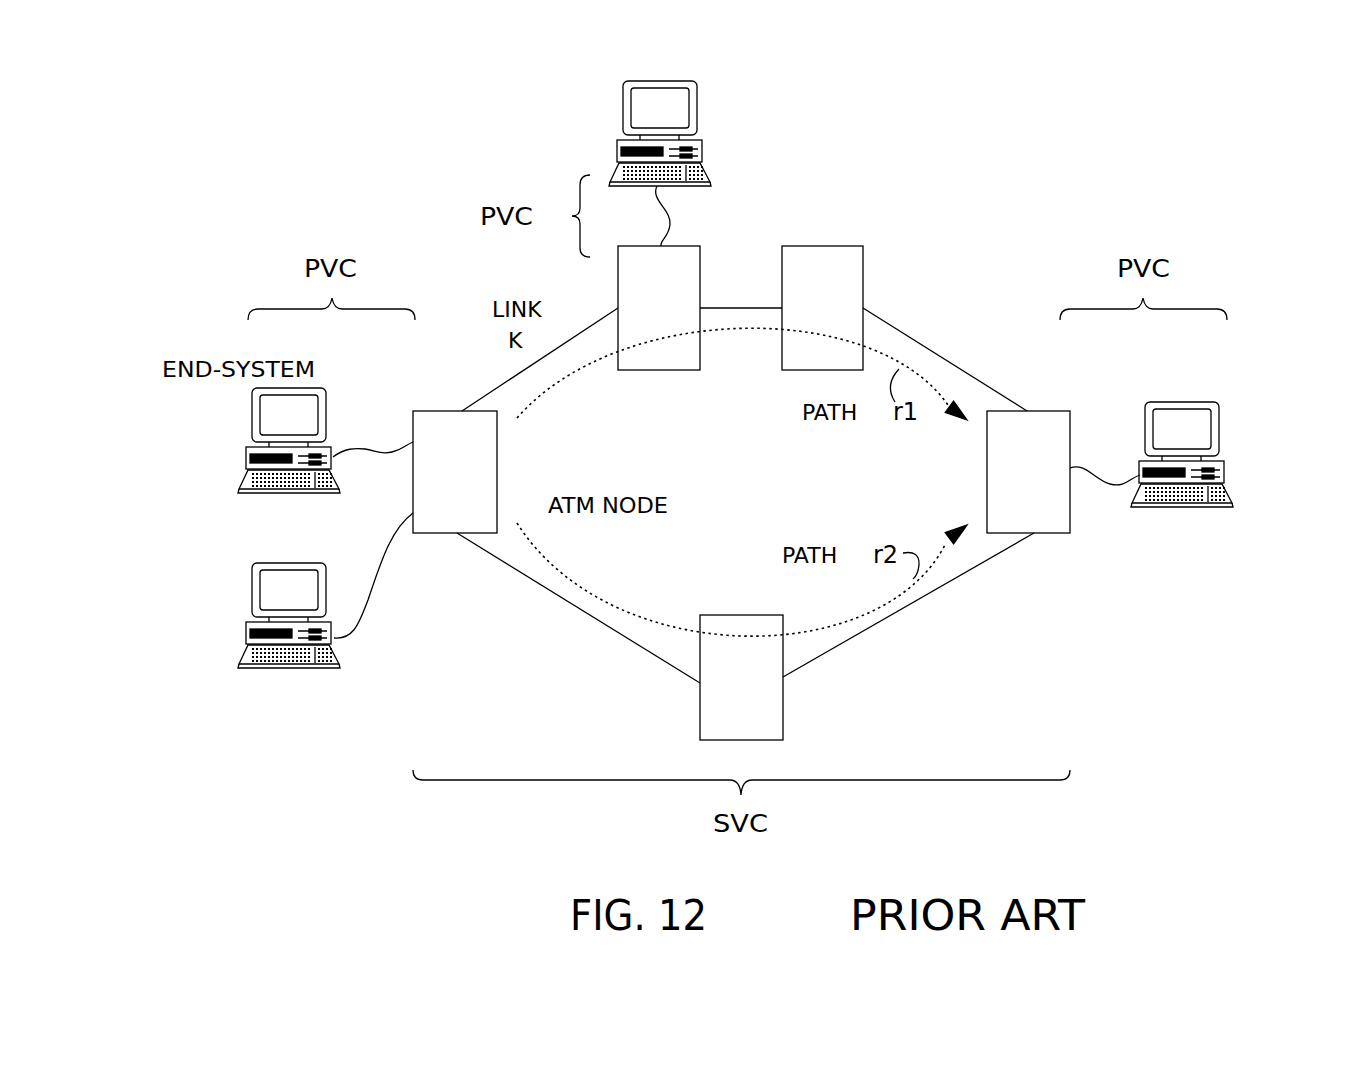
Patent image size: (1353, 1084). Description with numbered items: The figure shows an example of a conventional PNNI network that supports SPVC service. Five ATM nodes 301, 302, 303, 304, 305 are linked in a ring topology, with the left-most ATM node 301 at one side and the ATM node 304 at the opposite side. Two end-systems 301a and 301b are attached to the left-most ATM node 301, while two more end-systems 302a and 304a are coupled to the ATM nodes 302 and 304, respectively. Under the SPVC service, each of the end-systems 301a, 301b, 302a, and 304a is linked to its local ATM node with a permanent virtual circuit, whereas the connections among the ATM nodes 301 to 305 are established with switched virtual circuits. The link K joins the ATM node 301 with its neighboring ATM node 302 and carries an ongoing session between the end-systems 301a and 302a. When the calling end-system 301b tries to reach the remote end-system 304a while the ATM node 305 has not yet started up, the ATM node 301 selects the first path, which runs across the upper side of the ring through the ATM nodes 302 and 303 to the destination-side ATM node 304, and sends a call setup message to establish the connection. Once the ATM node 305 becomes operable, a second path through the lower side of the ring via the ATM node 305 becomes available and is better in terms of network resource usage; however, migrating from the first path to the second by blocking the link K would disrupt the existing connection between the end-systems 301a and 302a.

The ATM node 301 is at (497, 480).
The end-system 301a is at (258, 494).
The end-system 301b is at (268, 667).
The ATM node 302 is at (700, 267).
The end-system 302a is at (695, 162).
The ATM node 303 is at (863, 267).
The ATM node 304 is at (1070, 432).
The end-system 304a is at (1173, 402).
The ATM node 305 is at (783, 700).